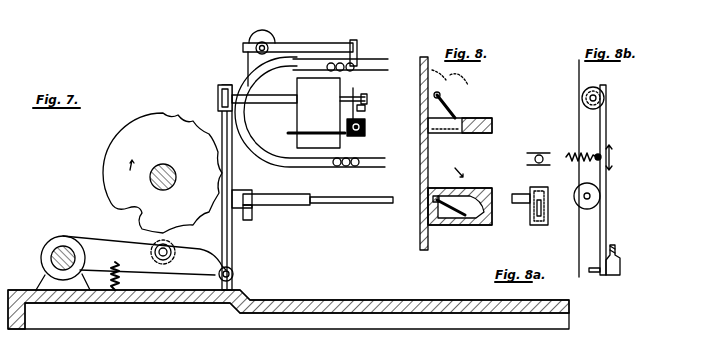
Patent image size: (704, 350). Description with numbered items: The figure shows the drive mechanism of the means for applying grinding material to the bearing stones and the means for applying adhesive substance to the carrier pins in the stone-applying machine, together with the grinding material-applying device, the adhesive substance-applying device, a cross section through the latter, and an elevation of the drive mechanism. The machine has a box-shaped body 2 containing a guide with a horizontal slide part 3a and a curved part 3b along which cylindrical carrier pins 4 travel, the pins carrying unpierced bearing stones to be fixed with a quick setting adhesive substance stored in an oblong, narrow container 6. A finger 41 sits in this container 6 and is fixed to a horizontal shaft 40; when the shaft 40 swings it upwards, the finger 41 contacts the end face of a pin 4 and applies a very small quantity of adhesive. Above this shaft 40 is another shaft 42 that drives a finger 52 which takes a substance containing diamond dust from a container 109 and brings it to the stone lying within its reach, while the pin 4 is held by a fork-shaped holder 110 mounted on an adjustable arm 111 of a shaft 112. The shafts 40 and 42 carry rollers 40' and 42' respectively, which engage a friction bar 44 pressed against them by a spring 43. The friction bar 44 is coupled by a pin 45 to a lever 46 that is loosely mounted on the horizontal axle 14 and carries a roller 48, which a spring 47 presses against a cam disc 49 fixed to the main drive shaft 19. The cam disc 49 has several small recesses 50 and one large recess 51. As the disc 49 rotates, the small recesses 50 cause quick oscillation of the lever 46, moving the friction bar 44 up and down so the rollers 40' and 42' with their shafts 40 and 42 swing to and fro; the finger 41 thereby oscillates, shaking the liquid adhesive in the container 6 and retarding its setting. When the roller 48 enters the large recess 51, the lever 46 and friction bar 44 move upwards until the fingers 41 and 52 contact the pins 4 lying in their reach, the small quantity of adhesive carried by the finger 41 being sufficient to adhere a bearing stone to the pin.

In FIG. 7, the box-shaped body 2 is at (289, 60).
In FIG. 7, the horizontal slide part 3a is at (322, 163).
In FIG. 7, the curved part 3b is at (272, 153).
In FIG. 7, the carrier pin 4 is at (372, 60).
In FIG. 8, the container 6 is at (480, 226).
In FIG. 8A, the container 6 is at (547, 211).
In FIG. 7, the horizontal axle 14 is at (56, 252).
In FIG. 7, the main drive shaft 19 is at (150, 177).
In FIG. 7, the horizontal shaft 40 is at (312, 207).
In FIG. 8A, the horizontal shaft 40 is at (519, 187).
In FIG. 8B, the horizontal shaft 40 is at (606, 196).
In FIG. 7, the roller 40' is at (262, 225).
In FIG. 8B, the roller 40' is at (617, 214).
In FIG. 8, the finger 41 is at (455, 205).
In FIG. 7, the shaft 42 is at (359, 100).
In FIG. 8B, the shaft 42 is at (609, 98).
In FIG. 7, the roller 42' is at (211, 81).
In FIG. 8B, the roller 42' is at (615, 77).
In FIG. 8, the spring 43 is at (423, 112).
In FIG. 8B, the spring 43 is at (573, 152).
In FIG. 7, the friction bar 44 is at (222, 118).
In FIG. 8B, the friction bar 44 is at (607, 129).
In FIG. 8B, the pin 45 is at (594, 273).
In FIG. 7, the lever 46 is at (210, 263).
In FIG. 8B, the lever 46 is at (617, 254).
In FIG. 7, the spring 47 is at (120, 278).
In FIG. 7, the roller 48 is at (163, 263).
In FIG. 7, the cam disc 49 is at (113, 145).
In FIG. 7, the small recesses 50 is at (165, 117).
In FIG. 7, the large recess 51 is at (134, 211).
In FIG. 7, the finger 52 is at (366, 108).
In FIG. 8, the finger 52 is at (451, 108).
In FIG. 7, the container 109 is at (366, 130).
In FIG. 8, the container 109 is at (493, 125).
In FIG. 7, the fork-shaped holder 110 is at (357, 42).
In FIG. 7, the adjustable arm 111 is at (320, 43).
In FIG. 7, the shaft 112 is at (265, 40).